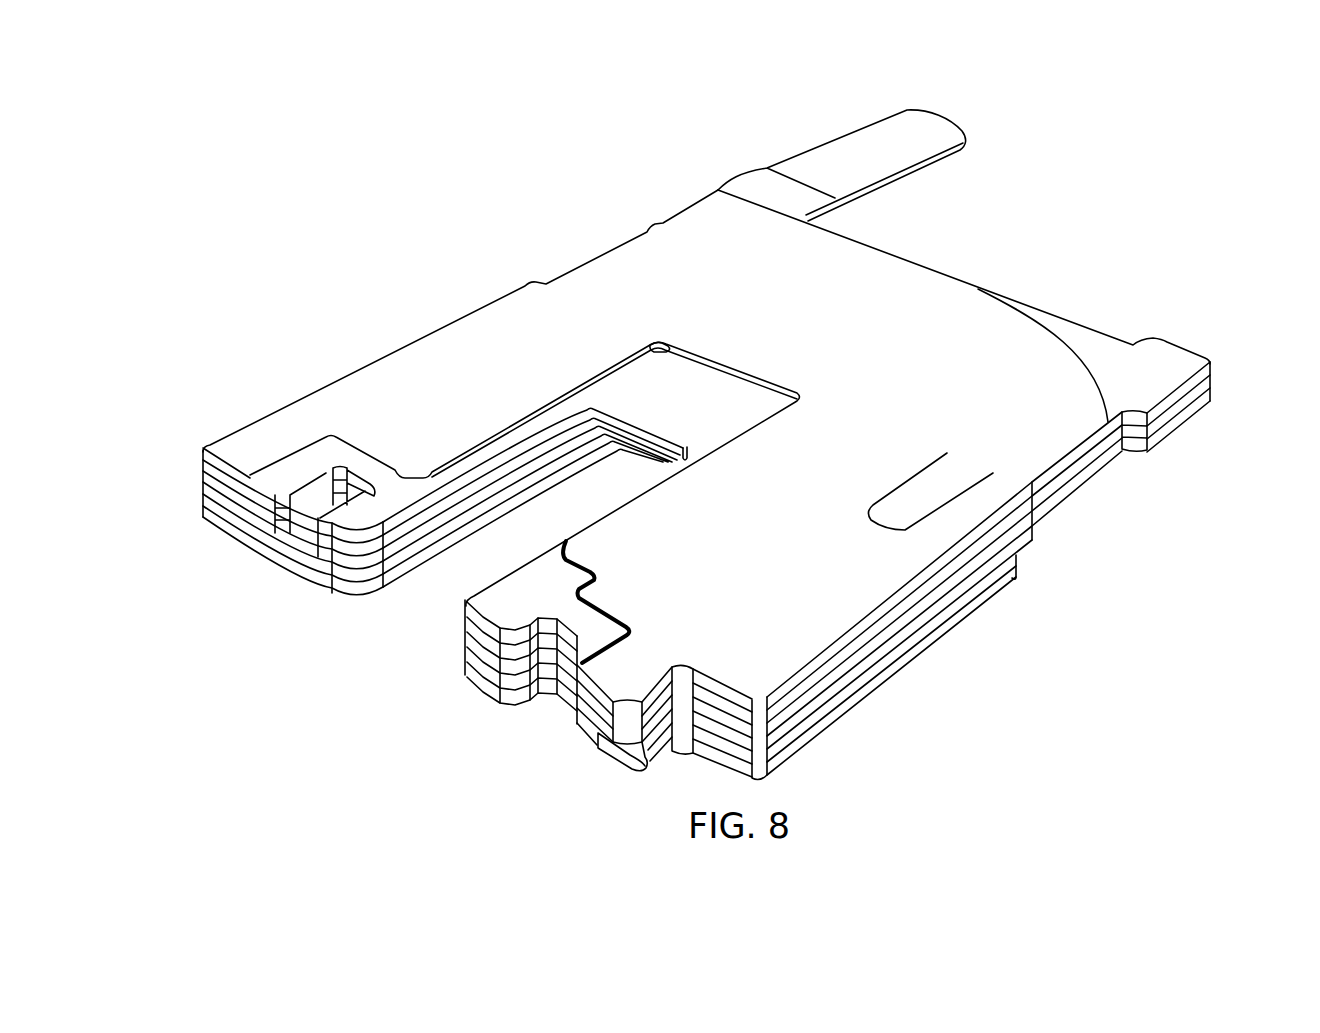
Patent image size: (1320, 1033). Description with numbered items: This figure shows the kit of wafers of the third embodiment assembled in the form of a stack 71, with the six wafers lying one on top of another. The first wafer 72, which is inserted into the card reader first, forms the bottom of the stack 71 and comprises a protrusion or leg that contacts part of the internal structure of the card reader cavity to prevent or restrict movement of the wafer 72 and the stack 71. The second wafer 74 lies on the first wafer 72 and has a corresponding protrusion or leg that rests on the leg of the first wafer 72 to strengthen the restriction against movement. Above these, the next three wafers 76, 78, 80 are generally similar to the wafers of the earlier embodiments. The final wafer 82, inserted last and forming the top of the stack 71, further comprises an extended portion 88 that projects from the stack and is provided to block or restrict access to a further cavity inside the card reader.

The stack 71 is at (1212, 325).
The first wafer 72 is at (205, 517).
The second wafer 74 is at (208, 500).
The wafer 76 is at (207, 492).
The wafer 78 is at (208, 480).
The wafer 80 is at (207, 458).
The final wafer 82 is at (226, 434).
The extended portion 88 is at (928, 116).